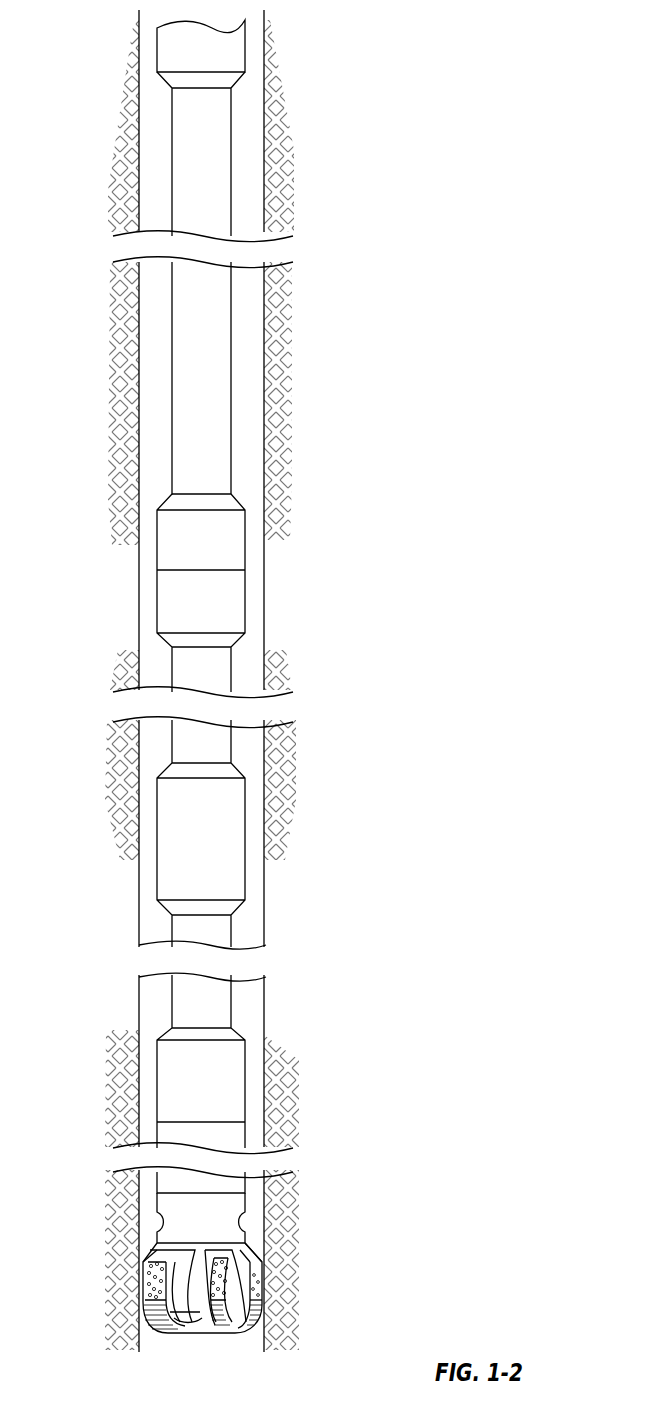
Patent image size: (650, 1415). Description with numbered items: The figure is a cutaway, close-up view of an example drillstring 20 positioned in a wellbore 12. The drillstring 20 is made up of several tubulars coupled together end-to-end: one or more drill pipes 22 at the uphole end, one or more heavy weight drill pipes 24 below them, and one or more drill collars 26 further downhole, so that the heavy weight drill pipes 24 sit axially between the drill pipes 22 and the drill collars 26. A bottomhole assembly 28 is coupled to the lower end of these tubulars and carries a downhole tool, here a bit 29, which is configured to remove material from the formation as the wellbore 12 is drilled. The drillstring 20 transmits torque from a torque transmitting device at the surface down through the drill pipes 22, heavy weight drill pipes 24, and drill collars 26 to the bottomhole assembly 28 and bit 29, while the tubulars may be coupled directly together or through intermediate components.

The wellbore 12 is at (243, 937).
The drillstring 20 is at (163, 452).
The drill pipe 22 is at (205, 150).
The heavy weight drill pipe 24 is at (215, 667).
The drill collar 26 is at (230, 1140).
The bottomhole assembly 28 is at (203, 1263).
The bit 29 is at (170, 1290).